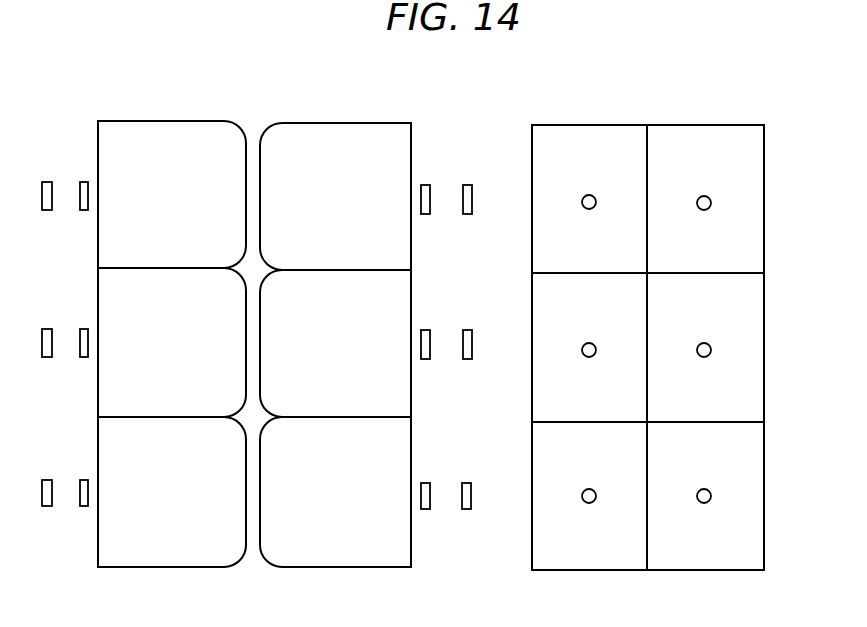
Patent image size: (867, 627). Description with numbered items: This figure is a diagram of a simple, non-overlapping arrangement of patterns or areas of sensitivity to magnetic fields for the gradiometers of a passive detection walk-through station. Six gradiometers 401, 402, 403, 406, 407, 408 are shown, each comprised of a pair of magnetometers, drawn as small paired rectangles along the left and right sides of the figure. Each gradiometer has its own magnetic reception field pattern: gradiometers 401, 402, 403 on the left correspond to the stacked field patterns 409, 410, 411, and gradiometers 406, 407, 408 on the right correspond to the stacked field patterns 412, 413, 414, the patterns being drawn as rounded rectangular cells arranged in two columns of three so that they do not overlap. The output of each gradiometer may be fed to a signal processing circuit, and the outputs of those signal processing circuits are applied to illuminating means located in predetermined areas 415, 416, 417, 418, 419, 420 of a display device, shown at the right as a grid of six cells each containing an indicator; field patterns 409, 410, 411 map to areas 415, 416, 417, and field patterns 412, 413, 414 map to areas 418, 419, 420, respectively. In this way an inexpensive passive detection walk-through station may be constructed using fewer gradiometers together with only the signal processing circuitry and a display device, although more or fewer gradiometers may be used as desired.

The gradiometer 401 is at (72, 196).
The gradiometer 402 is at (71, 340).
The gradiometer 403 is at (72, 488).
The gradiometer 406 is at (451, 200).
The gradiometer 407 is at (451, 340).
The gradiometer 408 is at (450, 490).
The magnetic reception field pattern 409 is at (186, 213).
The magnetic reception field pattern 410 is at (176, 364).
The magnetic reception field pattern 411 is at (172, 507).
The magnetic reception field pattern 412 is at (344, 217).
The magnetic reception field pattern 413 is at (338, 364).
The magnetic reception field pattern 414 is at (336, 507).
The predetermined area 415 is at (599, 179).
The predetermined area 416 is at (599, 326).
The predetermined area 417 is at (599, 474).
The predetermined area 418 is at (715, 177).
The predetermined area 419 is at (715, 324).
The predetermined area 420 is at (710, 463).